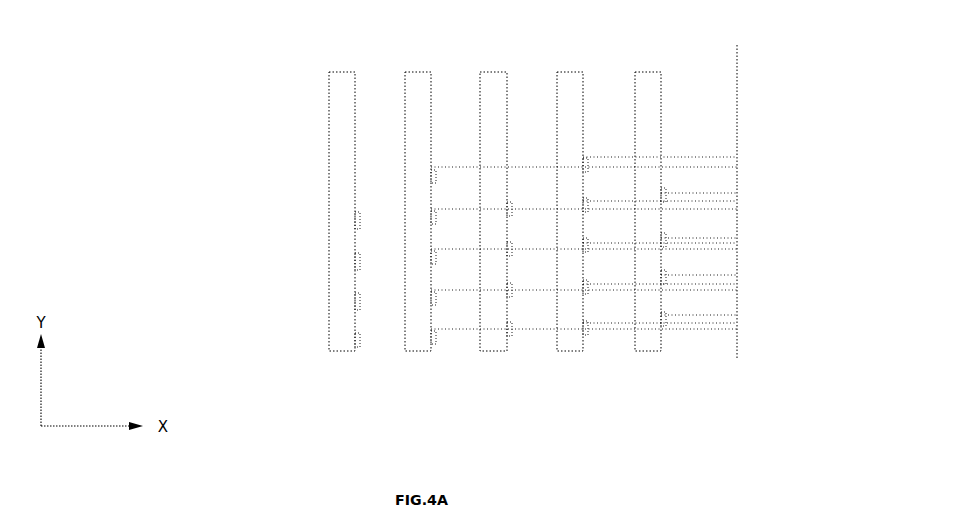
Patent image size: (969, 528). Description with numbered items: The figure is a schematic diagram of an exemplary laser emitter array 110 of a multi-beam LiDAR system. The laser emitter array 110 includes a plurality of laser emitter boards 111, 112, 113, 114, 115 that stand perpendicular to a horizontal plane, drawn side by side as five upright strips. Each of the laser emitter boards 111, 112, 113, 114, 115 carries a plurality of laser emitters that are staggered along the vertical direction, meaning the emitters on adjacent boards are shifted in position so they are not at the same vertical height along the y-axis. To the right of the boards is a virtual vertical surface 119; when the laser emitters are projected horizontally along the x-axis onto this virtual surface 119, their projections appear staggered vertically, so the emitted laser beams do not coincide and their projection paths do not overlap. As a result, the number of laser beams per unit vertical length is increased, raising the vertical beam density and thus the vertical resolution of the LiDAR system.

The laser emitter array 110 is at (329, 358).
The laser emitter board 111 is at (333, 72).
The laser emitter board 112 is at (410, 72).
The laser emitter board 113 is at (486, 72).
The laser emitter board 114 is at (572, 72).
The laser emitter board 115 is at (650, 72).
The virtual vertical surface 119 is at (737, 122).